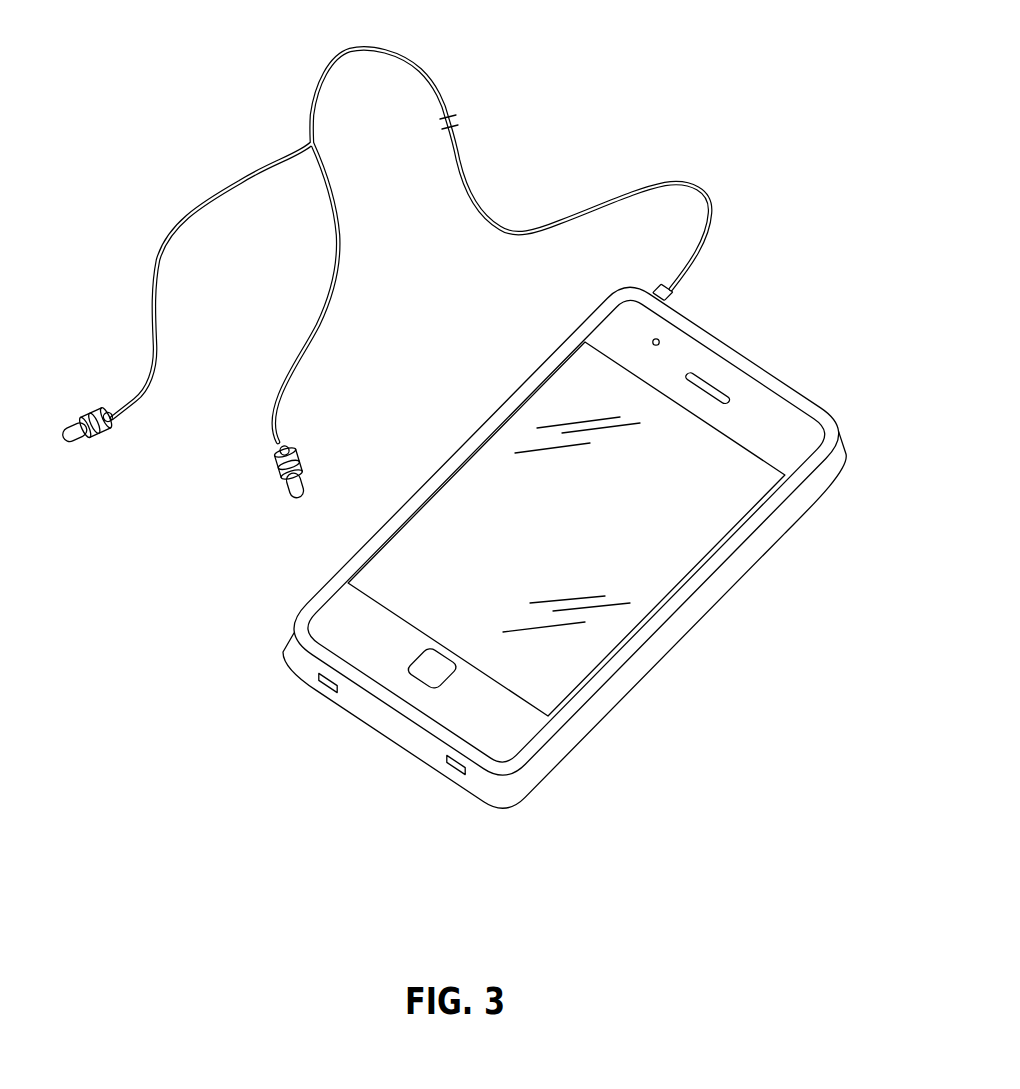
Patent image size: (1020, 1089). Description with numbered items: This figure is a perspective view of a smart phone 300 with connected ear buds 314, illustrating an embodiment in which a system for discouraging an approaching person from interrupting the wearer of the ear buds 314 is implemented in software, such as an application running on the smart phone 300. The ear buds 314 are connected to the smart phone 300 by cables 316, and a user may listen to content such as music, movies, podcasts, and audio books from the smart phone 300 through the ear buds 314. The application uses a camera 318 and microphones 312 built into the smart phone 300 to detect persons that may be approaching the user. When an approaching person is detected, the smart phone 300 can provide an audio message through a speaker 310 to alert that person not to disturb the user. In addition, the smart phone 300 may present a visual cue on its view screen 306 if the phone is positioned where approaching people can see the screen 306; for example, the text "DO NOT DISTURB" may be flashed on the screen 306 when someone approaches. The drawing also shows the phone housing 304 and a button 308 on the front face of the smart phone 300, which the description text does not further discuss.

The smart phone 300 is at (703, 150).
The housing of portable electronic device 304 is at (778, 423).
The view screen 306 is at (592, 534).
The home button 308 is at (424, 676).
The speaker 310 is at (712, 380).
The microphones 312 is at (318, 686).
The ear buds 314 is at (267, 471).
The cables 316 is at (412, 68).
The camera 318 is at (662, 342).